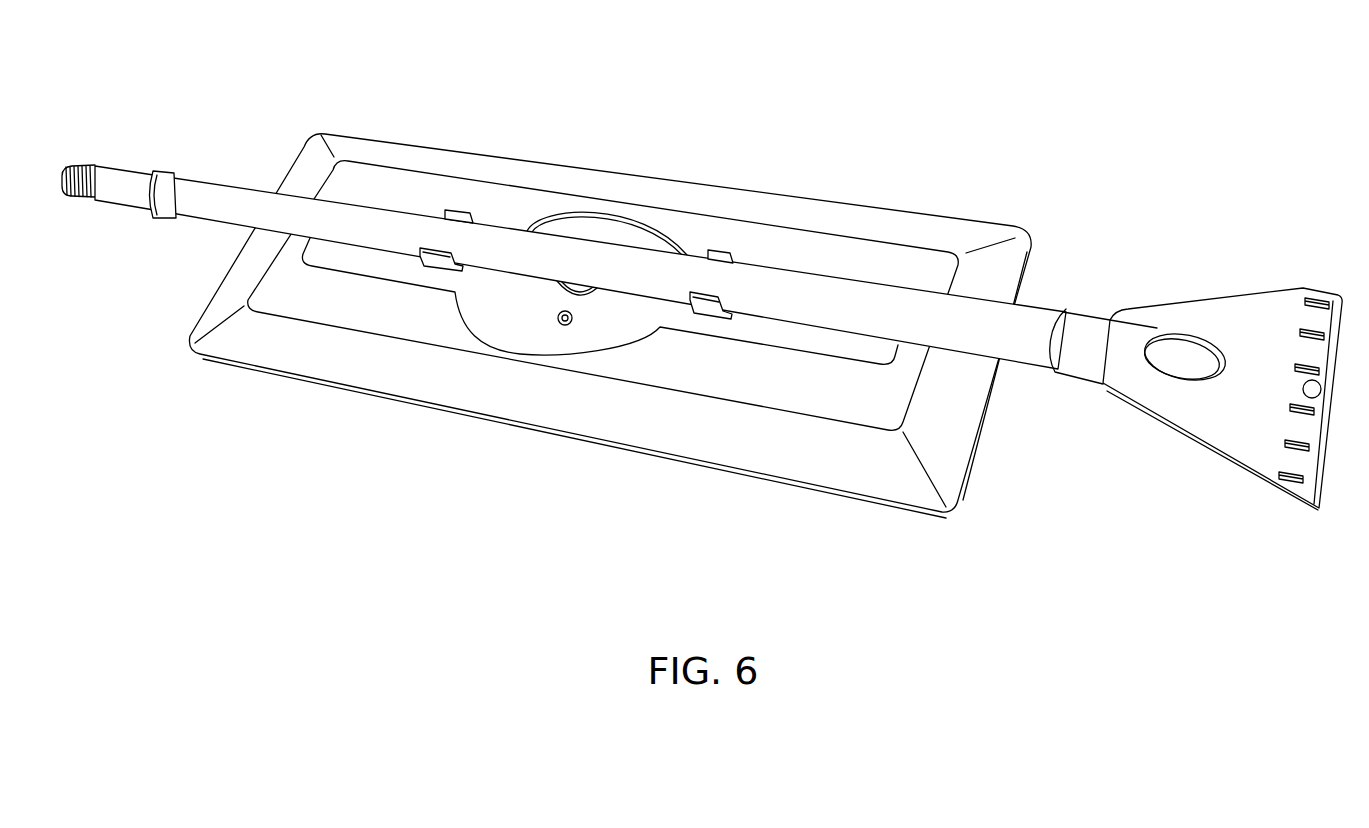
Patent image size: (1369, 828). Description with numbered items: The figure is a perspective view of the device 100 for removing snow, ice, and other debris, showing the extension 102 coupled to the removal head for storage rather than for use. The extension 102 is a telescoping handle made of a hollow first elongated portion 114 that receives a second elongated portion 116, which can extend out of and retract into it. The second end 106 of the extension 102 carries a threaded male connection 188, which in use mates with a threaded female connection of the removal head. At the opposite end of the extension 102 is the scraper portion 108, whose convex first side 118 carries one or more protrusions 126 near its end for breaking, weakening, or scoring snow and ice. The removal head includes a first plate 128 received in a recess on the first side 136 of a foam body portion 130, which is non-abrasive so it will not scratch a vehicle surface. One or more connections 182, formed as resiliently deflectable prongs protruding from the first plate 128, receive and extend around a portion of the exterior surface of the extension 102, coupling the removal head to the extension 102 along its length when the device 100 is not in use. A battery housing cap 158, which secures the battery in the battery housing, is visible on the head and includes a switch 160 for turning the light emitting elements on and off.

The device 100 is at (562, 61).
The extension 102 is at (554, 248).
The second end 106 is at (102, 164).
The scraper portion 108 is at (1198, 373).
The first elongated portion 114 is at (192, 202).
The second elongated portion 116 is at (112, 188).
The first side 118 is at (1207, 420).
The protrusions 126 is at (1320, 293).
The first plate 128 is at (807, 343).
The body portion 130 is at (988, 423).
The first side 136 is at (827, 252).
The battery housing cap 158 is at (563, 327).
The switch 160 is at (573, 323).
The connections 182 is at (723, 250).
The threaded male connection 188 is at (73, 164).